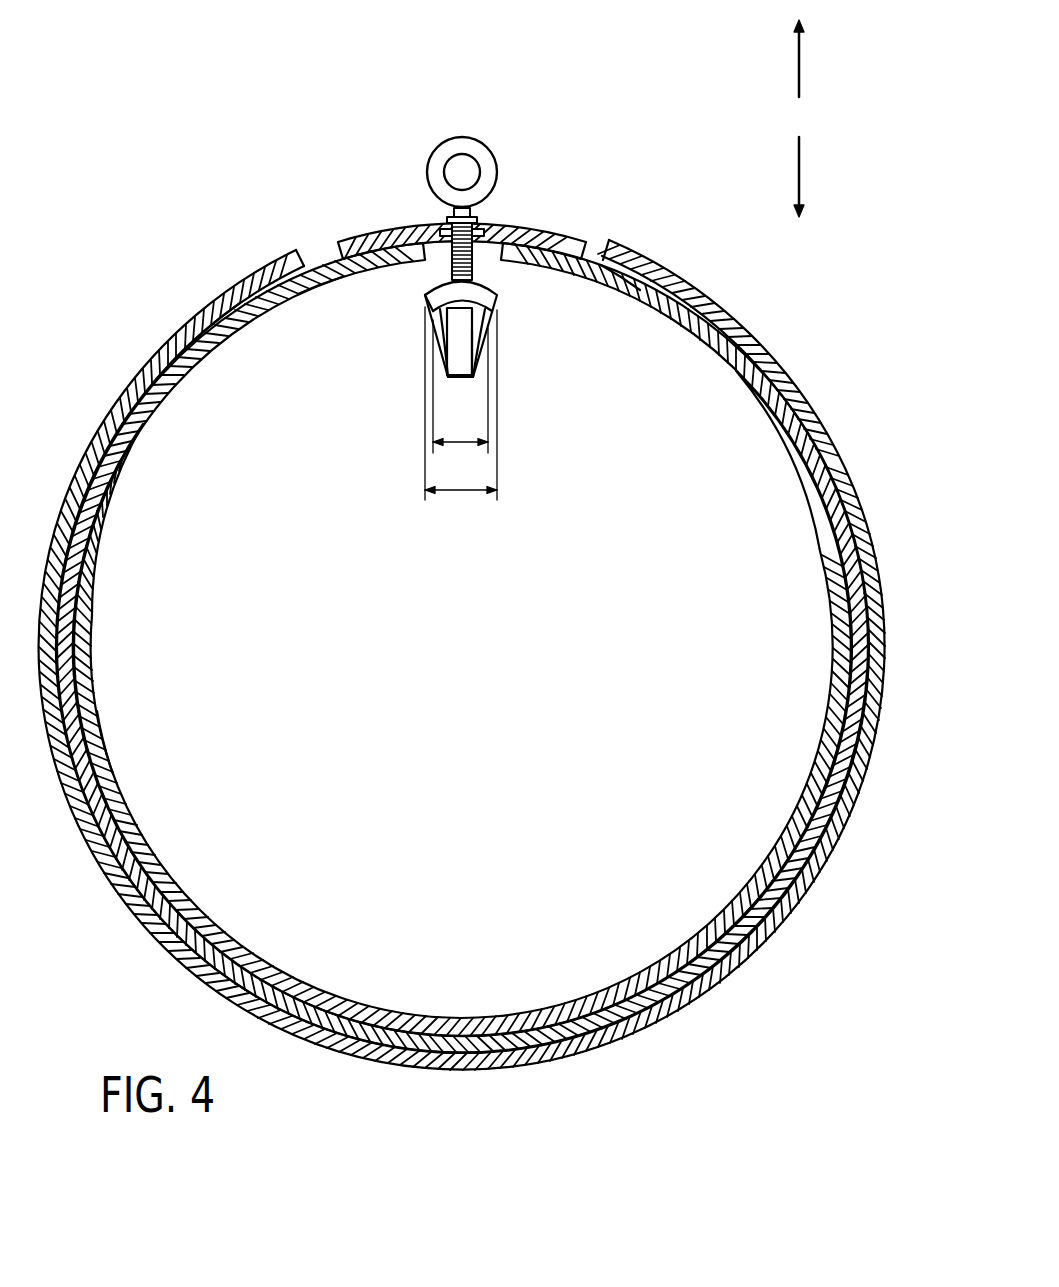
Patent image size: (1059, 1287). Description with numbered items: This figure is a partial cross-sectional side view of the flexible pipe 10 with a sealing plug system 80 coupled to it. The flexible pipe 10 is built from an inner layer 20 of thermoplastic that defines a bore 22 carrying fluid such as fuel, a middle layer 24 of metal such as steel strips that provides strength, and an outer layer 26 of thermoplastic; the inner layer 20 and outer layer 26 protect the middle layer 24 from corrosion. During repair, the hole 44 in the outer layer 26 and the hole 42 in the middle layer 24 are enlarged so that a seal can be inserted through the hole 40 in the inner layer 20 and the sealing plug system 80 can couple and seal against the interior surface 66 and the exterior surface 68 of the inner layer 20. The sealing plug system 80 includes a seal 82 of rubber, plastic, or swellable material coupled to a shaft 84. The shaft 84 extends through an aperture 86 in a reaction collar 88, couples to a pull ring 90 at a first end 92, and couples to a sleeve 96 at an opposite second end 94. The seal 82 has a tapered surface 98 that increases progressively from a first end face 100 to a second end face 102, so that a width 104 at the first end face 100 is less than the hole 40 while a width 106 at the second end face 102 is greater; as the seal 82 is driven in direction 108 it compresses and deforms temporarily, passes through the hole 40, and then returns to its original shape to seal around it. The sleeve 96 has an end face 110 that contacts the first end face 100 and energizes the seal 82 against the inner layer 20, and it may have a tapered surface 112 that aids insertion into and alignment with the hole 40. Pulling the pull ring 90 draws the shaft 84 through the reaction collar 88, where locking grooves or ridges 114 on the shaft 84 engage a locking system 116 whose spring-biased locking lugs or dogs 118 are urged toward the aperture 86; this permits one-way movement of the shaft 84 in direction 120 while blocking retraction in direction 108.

The flexible pipe 10 is at (820, 342).
The inner layer 20 is at (430, 1015).
The bore 22 is at (286, 663).
The middle layer 24 is at (516, 1036).
The outer layer 26 is at (463, 1057).
The hole 40 is at (345, 280).
The hole 42 is at (265, 290).
The hole 44 is at (262, 268).
The interior surface 66 is at (104, 743).
The exterior surface 68 is at (597, 282).
The sealing plug system 80 is at (600, 93).
The seal 82 is at (506, 307).
The shaft 84 is at (425, 287).
The aperture 86 is at (445, 228).
The reaction collar 88 is at (560, 262).
The pull ring 90 is at (442, 145).
The first end 92 is at (403, 154).
The second end 94 is at (507, 398).
The sleeve 96 is at (432, 312).
The tapered surface 98 is at (427, 330).
The first end face 100 is at (498, 380).
The second end face 102 is at (484, 264).
The width 104 is at (462, 443).
The width 106 is at (462, 492).
The direction 108 is at (796, 170).
The end face 110 is at (427, 310).
The tapered surface 112 is at (498, 335).
The locking grooves or ridges 114 is at (493, 236).
The locking system 116 is at (508, 180).
The locking lugs or dogs 118 is at (440, 233).
The direction 120 is at (803, 63).